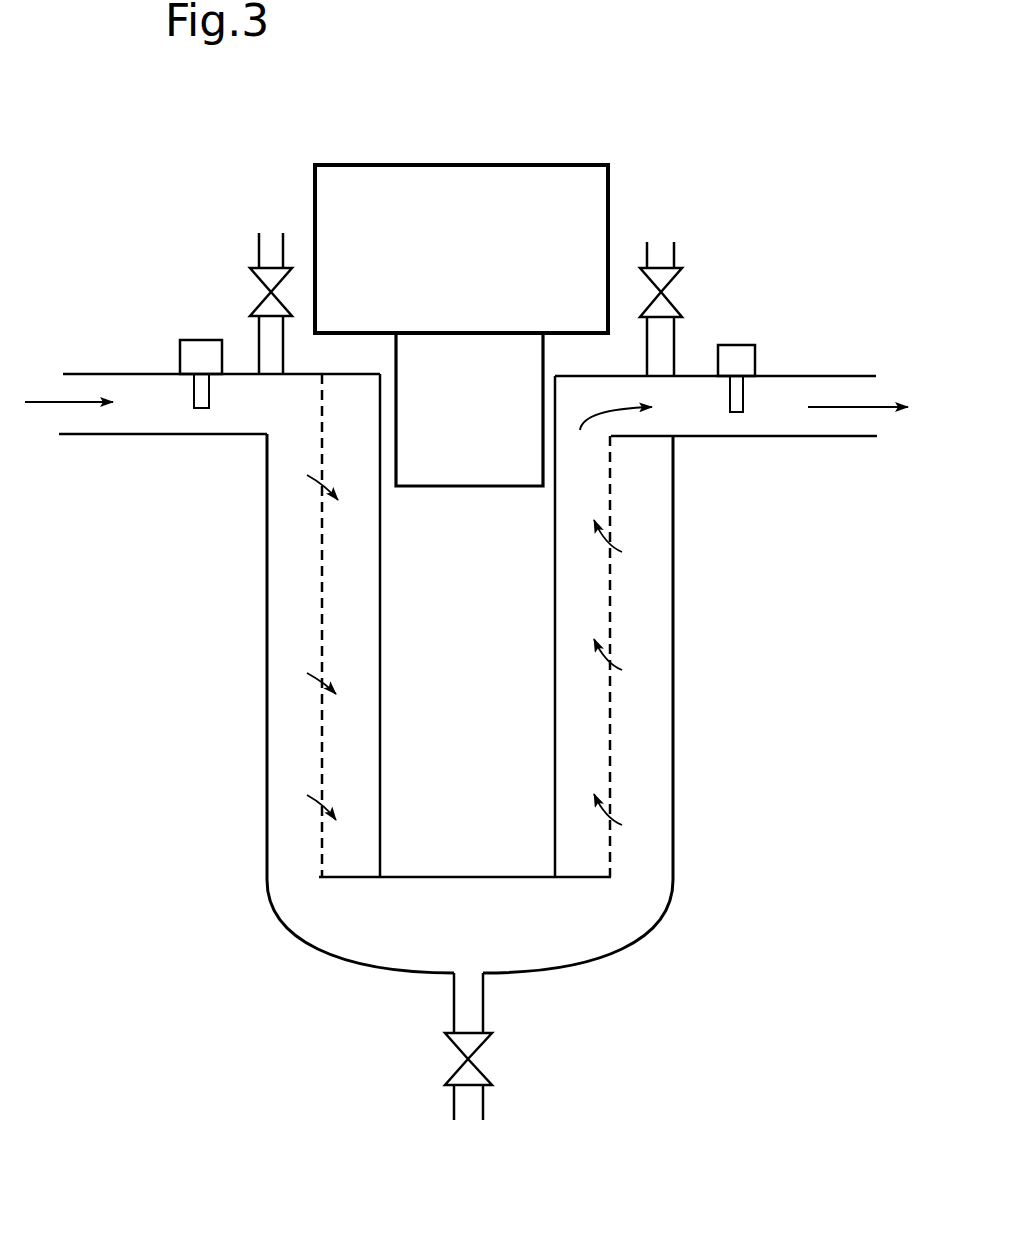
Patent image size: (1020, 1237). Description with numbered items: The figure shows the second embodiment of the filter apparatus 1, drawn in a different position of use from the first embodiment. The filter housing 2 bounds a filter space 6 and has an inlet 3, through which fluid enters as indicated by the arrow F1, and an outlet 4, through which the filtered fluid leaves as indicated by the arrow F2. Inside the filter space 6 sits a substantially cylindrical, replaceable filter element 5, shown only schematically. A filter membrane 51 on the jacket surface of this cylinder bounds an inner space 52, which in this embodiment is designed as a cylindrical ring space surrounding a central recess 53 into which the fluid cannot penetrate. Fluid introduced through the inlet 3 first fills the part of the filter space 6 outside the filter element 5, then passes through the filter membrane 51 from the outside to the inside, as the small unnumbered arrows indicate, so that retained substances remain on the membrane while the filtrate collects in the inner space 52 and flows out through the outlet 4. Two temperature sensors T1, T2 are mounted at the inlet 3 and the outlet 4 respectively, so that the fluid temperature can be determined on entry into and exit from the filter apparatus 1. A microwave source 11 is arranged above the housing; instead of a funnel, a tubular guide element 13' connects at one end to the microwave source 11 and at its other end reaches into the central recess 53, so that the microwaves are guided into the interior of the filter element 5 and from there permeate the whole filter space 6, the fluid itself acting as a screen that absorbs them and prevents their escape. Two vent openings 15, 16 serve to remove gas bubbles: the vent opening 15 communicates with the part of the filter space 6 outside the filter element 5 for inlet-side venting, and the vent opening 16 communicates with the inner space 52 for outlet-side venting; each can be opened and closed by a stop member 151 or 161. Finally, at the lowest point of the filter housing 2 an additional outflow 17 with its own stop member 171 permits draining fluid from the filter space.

The filter apparatus 1 is at (580, 125).
The filter housing 2 is at (470, 721).
The inlet 3 is at (145, 437).
The outlet 4 is at (812, 440).
The filter element 5 is at (464, 668).
The filter space 6 is at (407, 907).
The microwave source 11 is at (474, 253).
The tubular guide element 13' is at (375, 417).
The vent opening 15 is at (253, 267).
The vent opening 16 is at (675, 272).
The outflow 17 is at (512, 1046).
The filter membrane 51 is at (610, 713).
The inner space 52 is at (342, 582).
The central recess 53 is at (485, 647).
The stop member 151 is at (283, 238).
The stop member 161 is at (654, 242).
The stop member 171 is at (465, 1055).
The sensor T1 is at (189, 340).
The sensor T2 is at (740, 345).
The arrow F1 is at (47, 402).
The arrow F2 is at (847, 408).